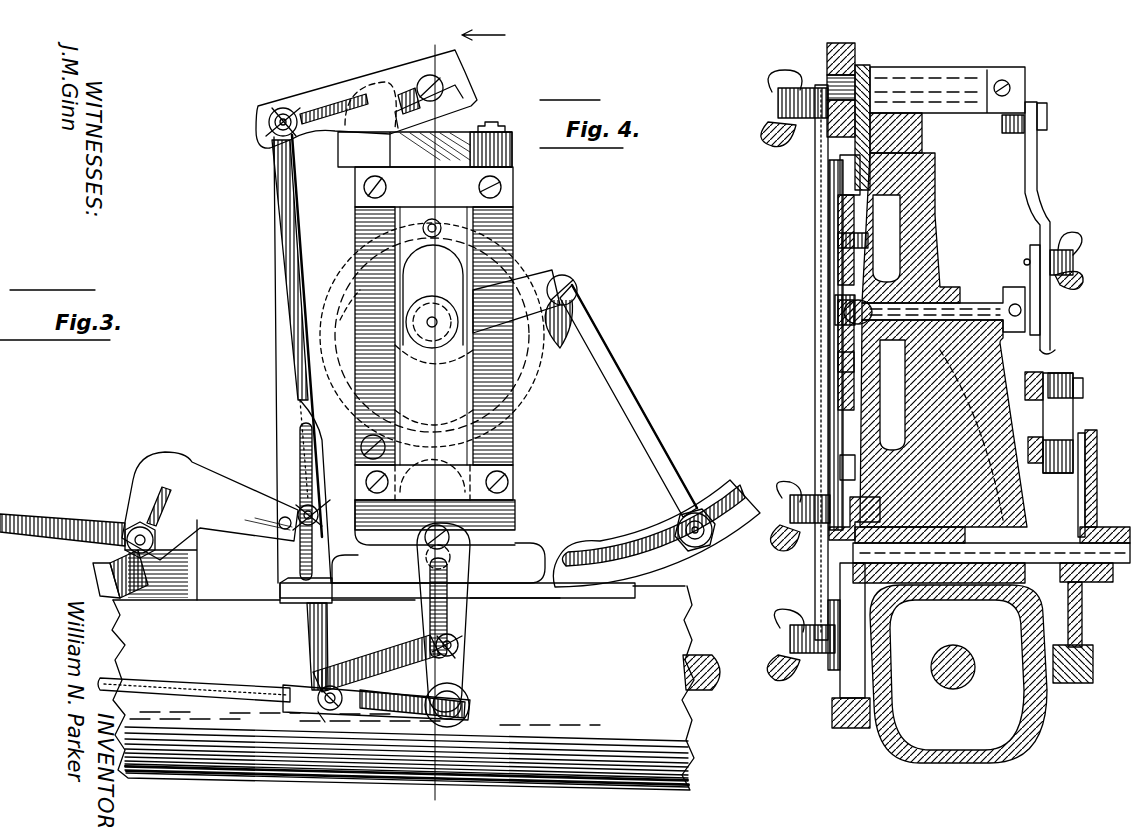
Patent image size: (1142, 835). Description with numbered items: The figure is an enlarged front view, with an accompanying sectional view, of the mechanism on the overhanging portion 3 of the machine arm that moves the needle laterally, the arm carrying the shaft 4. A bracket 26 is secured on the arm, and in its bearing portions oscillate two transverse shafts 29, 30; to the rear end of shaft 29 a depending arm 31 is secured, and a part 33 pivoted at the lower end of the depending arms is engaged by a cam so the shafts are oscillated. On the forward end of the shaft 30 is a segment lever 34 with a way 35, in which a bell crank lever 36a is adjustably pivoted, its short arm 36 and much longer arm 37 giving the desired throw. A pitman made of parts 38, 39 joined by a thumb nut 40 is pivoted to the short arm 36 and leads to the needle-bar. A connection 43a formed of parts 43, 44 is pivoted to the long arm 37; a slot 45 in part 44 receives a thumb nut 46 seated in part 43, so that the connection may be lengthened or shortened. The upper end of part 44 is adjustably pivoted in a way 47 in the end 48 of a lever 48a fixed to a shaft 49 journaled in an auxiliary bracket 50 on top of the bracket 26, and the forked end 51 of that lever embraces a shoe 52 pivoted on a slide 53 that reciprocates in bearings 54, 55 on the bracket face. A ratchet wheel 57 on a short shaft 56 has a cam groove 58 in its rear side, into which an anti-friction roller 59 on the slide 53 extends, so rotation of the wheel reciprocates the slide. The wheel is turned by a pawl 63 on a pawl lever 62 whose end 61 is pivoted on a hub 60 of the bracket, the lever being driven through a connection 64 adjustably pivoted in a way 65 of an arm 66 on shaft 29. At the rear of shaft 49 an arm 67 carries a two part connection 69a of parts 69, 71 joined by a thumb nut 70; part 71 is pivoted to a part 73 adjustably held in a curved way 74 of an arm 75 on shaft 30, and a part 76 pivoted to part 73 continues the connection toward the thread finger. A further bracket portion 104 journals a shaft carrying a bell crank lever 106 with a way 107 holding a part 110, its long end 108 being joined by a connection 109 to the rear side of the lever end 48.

In FIG. 3, the overhanging portion of the arm 3 is at (416, 688).
In FIG. 4, the overhanging portion of the arm 3 is at (1030, 728).
In FIG. 3, the shaft 4 is at (440, 800).
In FIG. 4, the shaft 4 is at (942, 652).
In FIG. 3, the bracket 26 is at (513, 412).
In FIG. 4, the bracket 26 is at (930, 222).
In FIG. 3, the shaft 29 is at (563, 548).
In FIG. 3, the shaft 30 is at (465, 550).
In FIG. 4, the shaft 30 is at (991, 555).
In FIG. 4, the depending arm 31 is at (1082, 613).
In FIG. 4, the part engaged by the cam 33 is at (1093, 680).
In FIG. 3, the segment lever 34 is at (470, 610).
In FIG. 4, the segment lever 34 is at (850, 728).
In FIG. 3, the way 35 is at (428, 605).
In FIG. 4, the way 35 is at (838, 575).
In FIG. 3, the short arm of bell crank lever 36 is at (465, 680).
In FIG. 3, the bell crank lever 36a is at (460, 642).
In FIG. 4, the bell crank lever 36a is at (801, 633).
In FIG. 3, the long arm of bell crank lever 37 is at (362, 665).
In FIG. 3, the pitman part 38 is at (205, 688).
In FIG. 3, the pitman part 39 is at (370, 716).
In FIG. 3, the thumb nut 40 is at (322, 715).
In FIG. 3, the connection part 43 is at (312, 628).
In FIG. 4, the connection part 43 is at (855, 517).
In FIG. 3, the connection 43a is at (290, 378).
In FIG. 4, the connection 43a is at (828, 420).
In FIG. 3, the connection part 44 is at (280, 245).
In FIG. 4, the connection part 44 is at (815, 195).
In FIG. 3, the slot 45 is at (313, 455).
In FIG. 3, the thumb nut 46 is at (296, 510).
In FIG. 4, the thumb nut 46 is at (792, 516).
In FIG. 3, the way 47 is at (305, 108).
In FIG. 3, the end of lever 48 is at (268, 126).
In FIG. 3, the lever 48a is at (352, 90).
In FIG. 4, the shaft 49 is at (965, 72).
In FIG. 3, the auxiliary bracket 50 is at (425, 149).
In FIG. 4, the auxiliary bracket 50 is at (890, 75).
In FIG. 3, the forked end 51 is at (412, 68).
In FIG. 4, the forked end 51 is at (833, 45).
In FIG. 3, the shoe 52 is at (455, 96).
In FIG. 4, the shoe 52 is at (822, 68).
In FIG. 3, the slide 53 is at (500, 124).
In FIG. 4, the slide 53 is at (887, 425).
In FIG. 3, the bearing 54 is at (434, 187).
In FIG. 4, the bearing 54 is at (840, 165).
In FIG. 3, the bearing 55 is at (513, 485).
In FIG. 4, the bearing 55 is at (840, 465).
In FIG. 4, the short shaft 56 is at (925, 305).
In FIG. 3, the ratchet wheel 57 is at (525, 275).
In FIG. 4, the ratchet wheel 57 is at (835, 298).
In FIG. 3, the cam groove 58 is at (343, 283).
In FIG. 4, the cam groove 58 is at (838, 370).
In FIG. 3, the anti-friction roller 59 is at (418, 233).
In FIG. 4, the anti-friction roller 59 is at (838, 240).
In FIG. 4, the hub 60 is at (883, 251).
In FIG. 4, the end of pawl lever 61 is at (870, 400).
In FIG. 3, the pawl lever 62 is at (483, 309).
In FIG. 3, the pawl 63 is at (563, 340).
In FIG. 3, the connection 64 is at (615, 362).
In FIG. 3, the way 65 is at (690, 548).
In FIG. 3, the arm 66 is at (625, 535).
In FIG. 4, the arm 67 is at (1012, 133).
In FIG. 4, the connection part 69 is at (1044, 172).
In FIG. 4, the two part connection 69a is at (1017, 237).
In FIG. 4, the thumb nut 70 is at (1075, 262).
In FIG. 4, the connection part 71 is at (1063, 338).
In FIG. 4, the part 73 is at (1050, 410).
In FIG. 4, the curved way 74 is at (1078, 488).
In FIG. 4, the arm 75 is at (1098, 482).
In FIG. 4, the part 76 is at (1068, 375).
In FIG. 3, the upwardly extending portion of bracket 104 is at (157, 450).
In FIG. 3, the bell crank lever 106 is at (195, 496).
In FIG. 3, the way 107 is at (148, 495).
In FIG. 3, the end of bell crank lever 108 is at (283, 530).
In FIG. 3, the connection 109 is at (285, 415).
In FIG. 3, the part of two part connection 110 is at (40, 522).